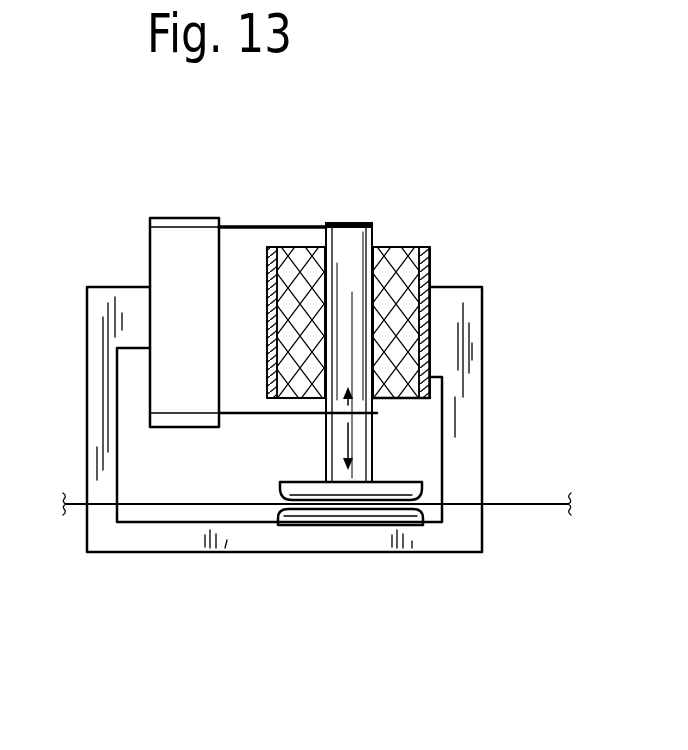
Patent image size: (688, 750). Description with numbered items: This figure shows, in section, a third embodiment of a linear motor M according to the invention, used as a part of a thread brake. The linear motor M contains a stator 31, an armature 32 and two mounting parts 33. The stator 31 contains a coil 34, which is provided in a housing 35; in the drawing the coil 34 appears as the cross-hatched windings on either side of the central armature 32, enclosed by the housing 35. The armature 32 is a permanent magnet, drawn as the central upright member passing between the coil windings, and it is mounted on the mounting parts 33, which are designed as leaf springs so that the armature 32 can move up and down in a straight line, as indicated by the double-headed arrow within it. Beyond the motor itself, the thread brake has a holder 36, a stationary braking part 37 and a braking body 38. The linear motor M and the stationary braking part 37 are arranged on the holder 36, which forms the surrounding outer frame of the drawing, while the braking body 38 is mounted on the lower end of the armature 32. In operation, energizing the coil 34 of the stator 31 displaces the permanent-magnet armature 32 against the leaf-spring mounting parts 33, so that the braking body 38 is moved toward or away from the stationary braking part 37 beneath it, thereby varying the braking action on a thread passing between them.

The stator 31 is at (427, 226).
The armature 32 is at (296, 451).
The mounting parts 33 is at (248, 228).
The coil 34 is at (398, 250).
The housing 35 is at (277, 343).
The holder 36 is at (467, 393).
The stationary braking part 37 is at (338, 515).
The braking body 38 is at (405, 490).
The linear motor M is at (462, 257).